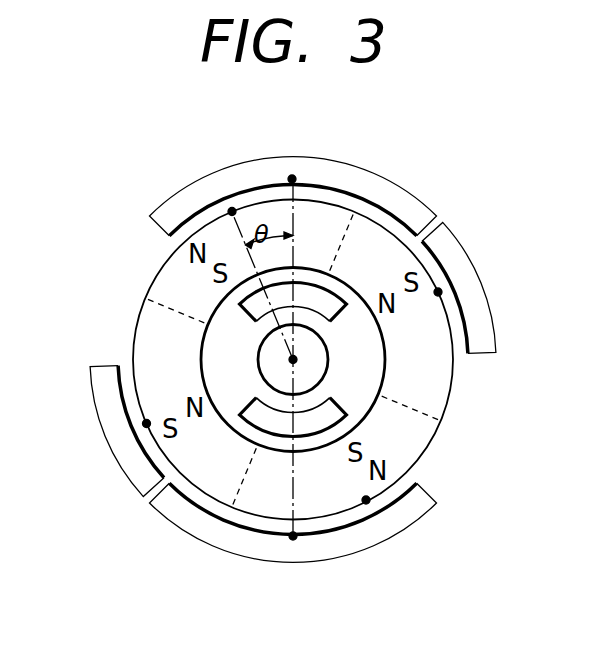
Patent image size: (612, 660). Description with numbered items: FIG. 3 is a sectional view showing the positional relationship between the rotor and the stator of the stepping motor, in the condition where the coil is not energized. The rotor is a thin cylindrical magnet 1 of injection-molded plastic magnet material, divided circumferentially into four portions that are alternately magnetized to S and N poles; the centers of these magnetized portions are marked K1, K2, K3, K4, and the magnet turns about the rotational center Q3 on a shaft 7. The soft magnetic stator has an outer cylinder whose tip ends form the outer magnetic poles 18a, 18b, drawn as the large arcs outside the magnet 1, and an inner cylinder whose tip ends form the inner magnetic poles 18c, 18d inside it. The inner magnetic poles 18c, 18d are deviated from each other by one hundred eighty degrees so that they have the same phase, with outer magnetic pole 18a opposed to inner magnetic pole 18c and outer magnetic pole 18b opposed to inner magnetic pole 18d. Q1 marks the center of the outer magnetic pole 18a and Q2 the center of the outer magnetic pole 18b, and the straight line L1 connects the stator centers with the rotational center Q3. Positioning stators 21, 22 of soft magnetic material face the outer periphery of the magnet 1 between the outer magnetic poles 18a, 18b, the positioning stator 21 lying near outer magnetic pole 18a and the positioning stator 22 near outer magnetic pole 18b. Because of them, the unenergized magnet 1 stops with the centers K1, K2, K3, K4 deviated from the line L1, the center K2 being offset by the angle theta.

The cylindrical magnet 1 is at (158, 264).
The rotor shaft 7 is at (275, 366).
The outer magnetic pole 18a is at (404, 200).
The outer magnetic pole 18b is at (417, 505).
The inner magnetic pole 18c is at (333, 312).
The inner magnetic pole 18d is at (333, 412).
The positioning stator 21 is at (480, 300).
The positioning stator 22 is at (103, 402).
The center of magnetized portion K1 is at (438, 292).
The center of magnetized portion K2 is at (232, 212).
The center of magnetized portion K3 is at (147, 424).
The center of magnetized portion K4 is at (367, 501).
The center of outer magnetic pole Q1 is at (291, 178).
The center of outer magnetic pole Q2 is at (293, 538).
The rotational center of the magnet Q3 is at (293, 359).
The straight line L1 is at (298, 250).